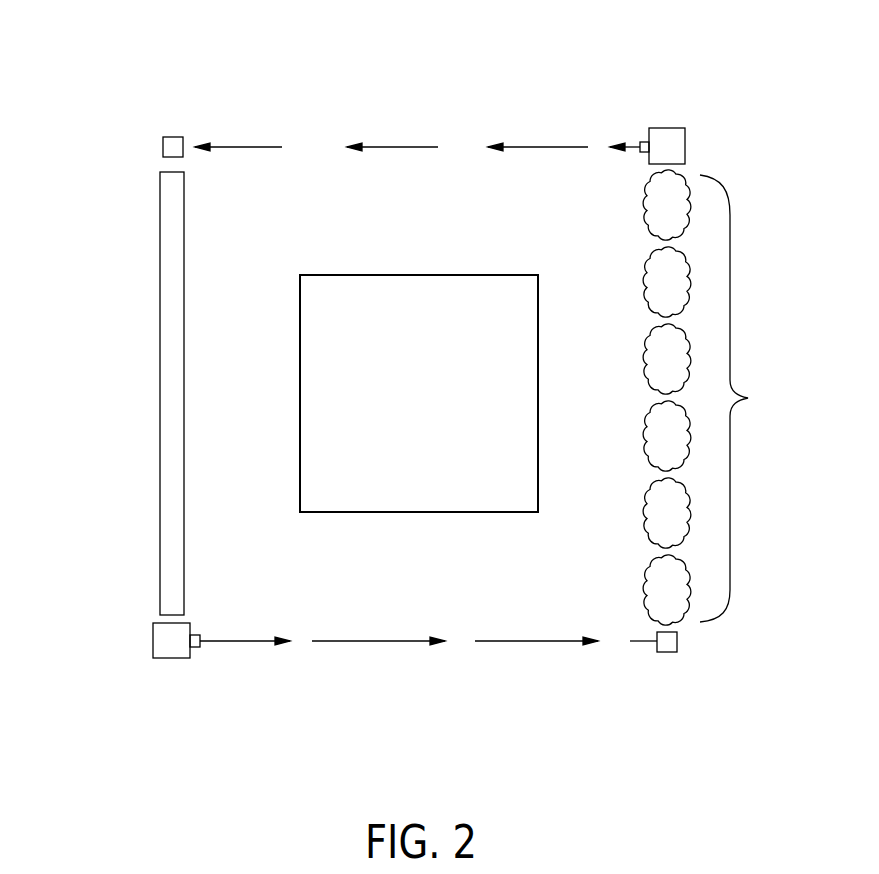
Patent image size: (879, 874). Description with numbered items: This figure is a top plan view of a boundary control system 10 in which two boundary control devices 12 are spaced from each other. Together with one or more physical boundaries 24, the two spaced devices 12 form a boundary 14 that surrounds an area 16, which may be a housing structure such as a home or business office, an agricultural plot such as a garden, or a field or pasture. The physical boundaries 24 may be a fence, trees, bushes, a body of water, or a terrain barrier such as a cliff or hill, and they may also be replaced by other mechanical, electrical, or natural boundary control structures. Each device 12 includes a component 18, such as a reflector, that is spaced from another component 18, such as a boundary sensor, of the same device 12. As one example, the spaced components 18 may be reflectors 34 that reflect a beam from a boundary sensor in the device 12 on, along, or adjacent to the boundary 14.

The boundary control system 10 is at (564, 705).
The boundary control device 12 is at (670, 128).
The boundary 14 is at (402, 147).
The area 16 is at (358, 393).
The component 18 is at (176, 148).
The physical boundary 24 is at (170, 298).
The reflector 34 is at (173, 137).